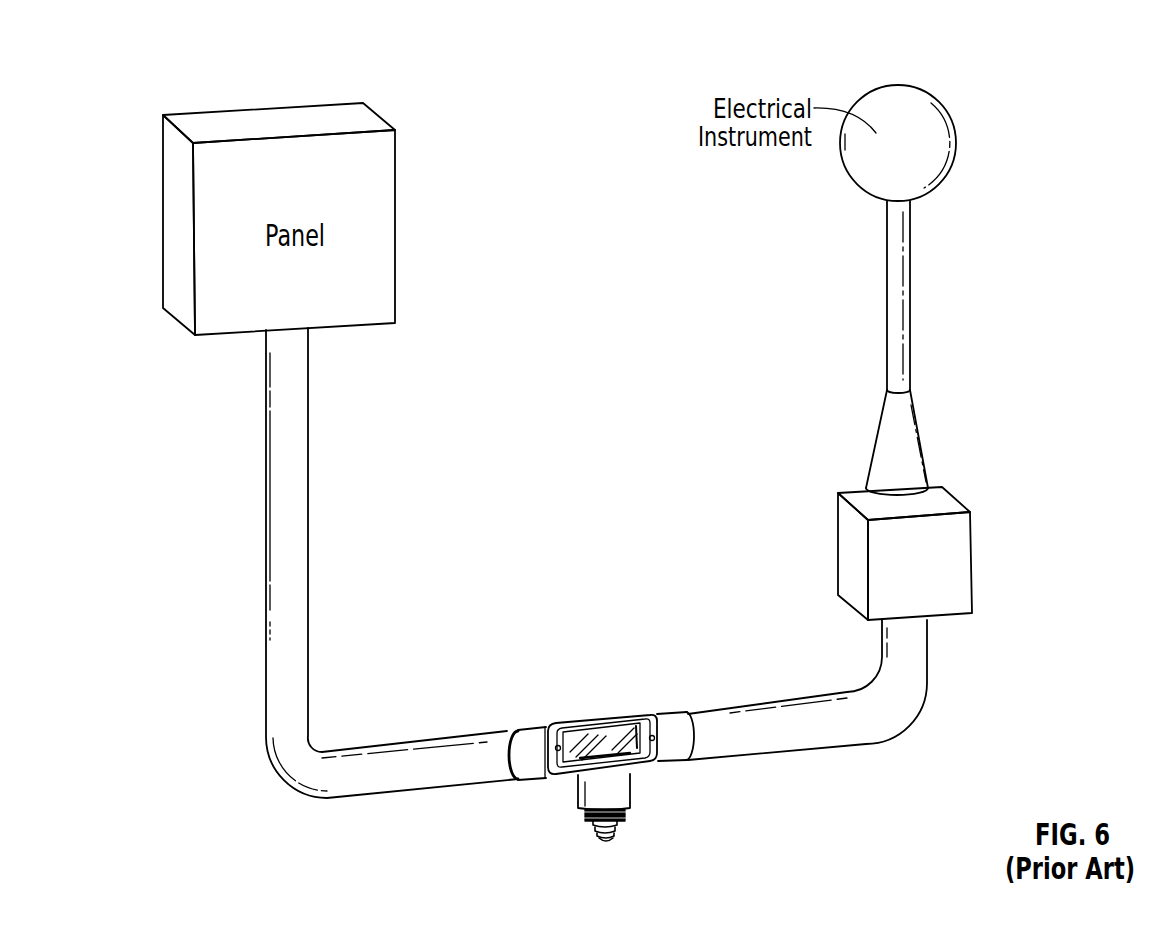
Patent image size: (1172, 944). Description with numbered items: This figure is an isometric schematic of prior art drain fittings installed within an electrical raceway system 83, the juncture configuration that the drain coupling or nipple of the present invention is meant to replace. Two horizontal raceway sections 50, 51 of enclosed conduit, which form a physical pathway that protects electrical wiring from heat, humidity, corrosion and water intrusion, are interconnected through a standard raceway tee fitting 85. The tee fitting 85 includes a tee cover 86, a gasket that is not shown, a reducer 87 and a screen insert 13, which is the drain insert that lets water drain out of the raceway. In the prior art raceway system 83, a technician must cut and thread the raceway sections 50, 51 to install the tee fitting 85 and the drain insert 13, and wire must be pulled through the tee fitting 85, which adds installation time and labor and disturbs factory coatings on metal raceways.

The prior art raceway system 83 is at (468, 67).
The raceway section 50 is at (357, 777).
The raceway section 51 is at (805, 727).
The tee fitting 85 is at (531, 738).
The tee cover 86 is at (607, 740).
The reducer 87 is at (584, 815).
The screen insert 13 is at (616, 839).